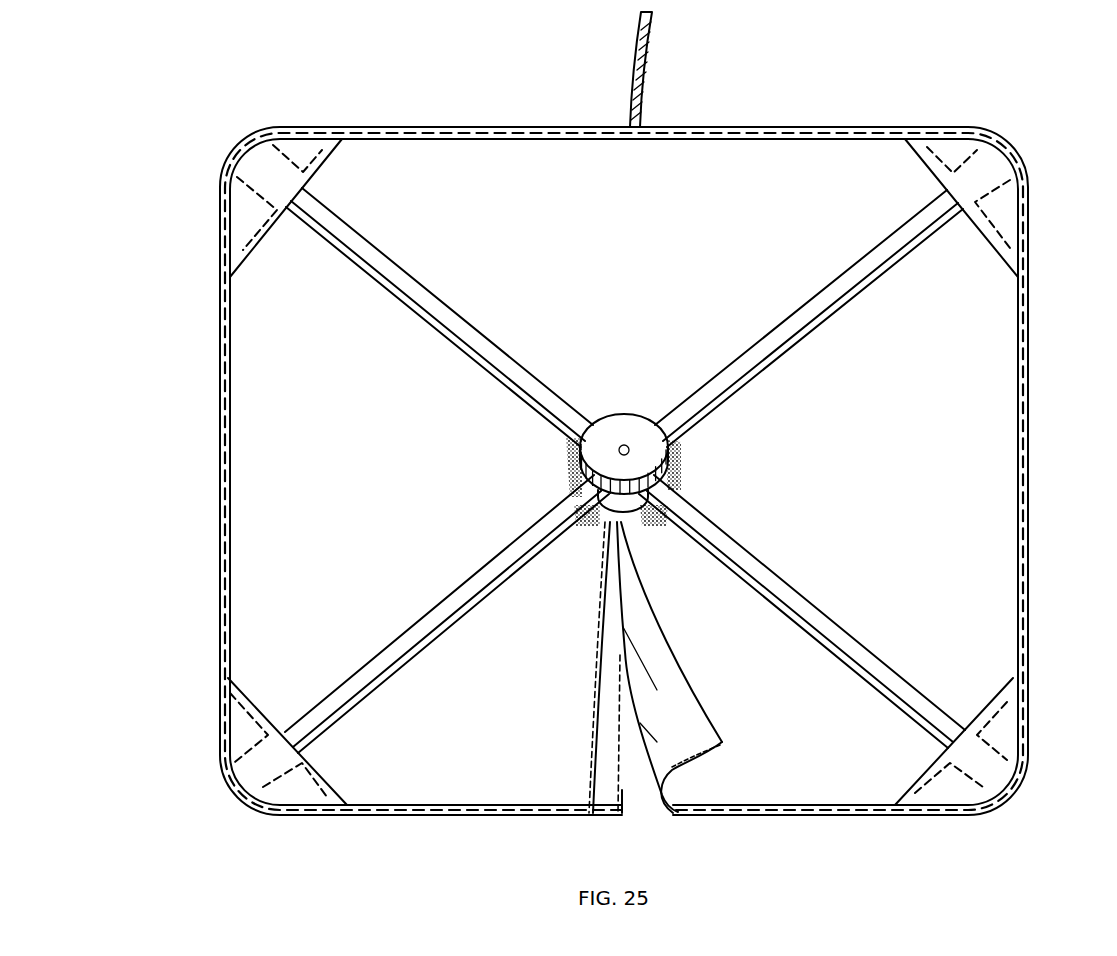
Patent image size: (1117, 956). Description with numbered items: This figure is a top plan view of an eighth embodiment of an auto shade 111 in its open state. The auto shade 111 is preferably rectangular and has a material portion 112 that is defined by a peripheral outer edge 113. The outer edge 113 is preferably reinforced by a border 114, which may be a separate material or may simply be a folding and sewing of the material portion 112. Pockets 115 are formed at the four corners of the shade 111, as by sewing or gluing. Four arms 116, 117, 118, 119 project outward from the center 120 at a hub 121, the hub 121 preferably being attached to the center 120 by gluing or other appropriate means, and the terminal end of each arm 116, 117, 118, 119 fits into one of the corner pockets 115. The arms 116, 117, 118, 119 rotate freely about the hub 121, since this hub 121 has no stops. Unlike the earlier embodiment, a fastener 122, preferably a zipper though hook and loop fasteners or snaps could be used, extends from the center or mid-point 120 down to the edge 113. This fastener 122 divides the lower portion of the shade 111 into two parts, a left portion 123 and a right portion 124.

The auto shade 111 is at (212, 420).
The material portion 112 is at (880, 472).
The outer edge 113 is at (1025, 462).
The border 114 is at (1022, 418).
The pockets 115 is at (1006, 218).
The arm 116 is at (902, 258).
The arm 117 is at (904, 682).
The arm 118 is at (325, 200).
The arm 119 is at (318, 702).
The center 120 is at (597, 522).
The hub 121 is at (628, 432).
The fastener 122 is at (592, 781).
The left portion 123 is at (440, 783).
The right portion 124 is at (806, 783).